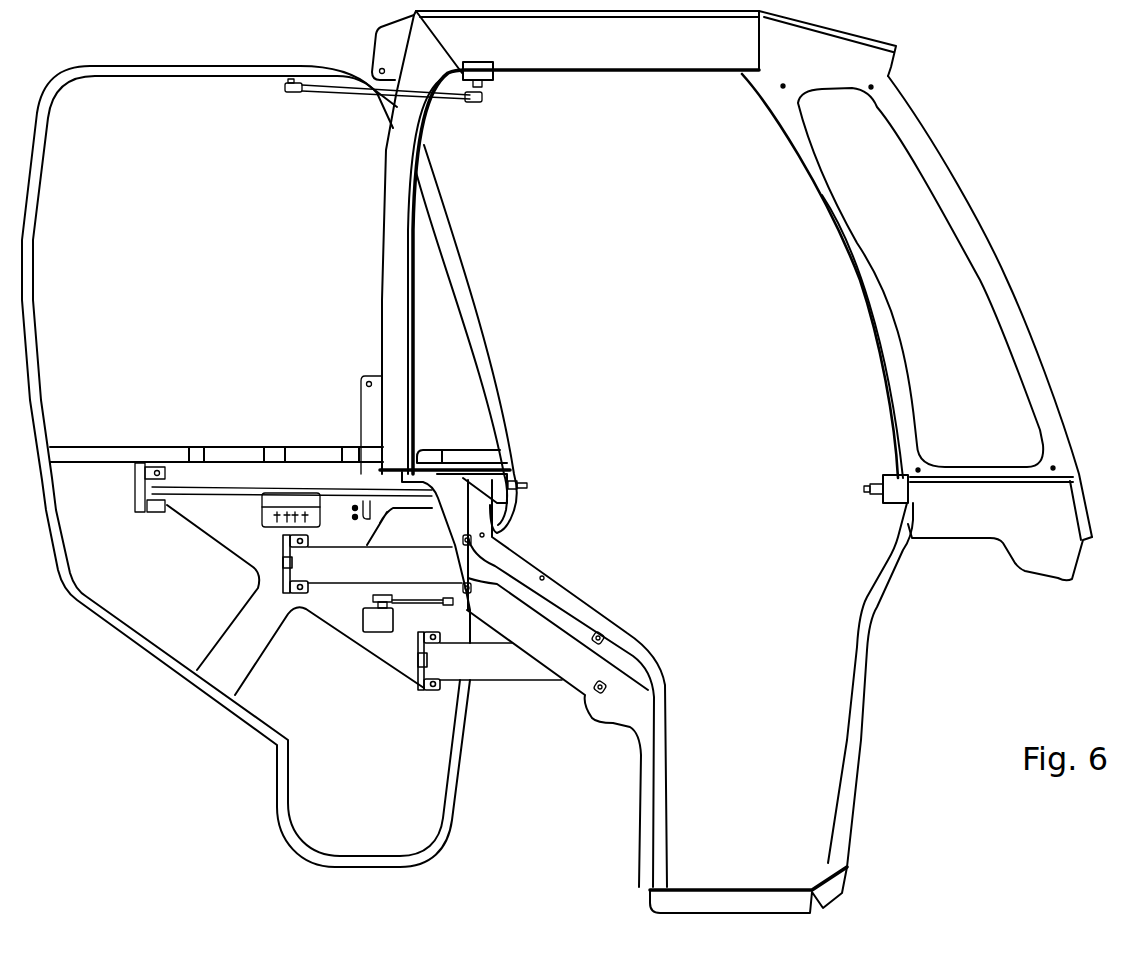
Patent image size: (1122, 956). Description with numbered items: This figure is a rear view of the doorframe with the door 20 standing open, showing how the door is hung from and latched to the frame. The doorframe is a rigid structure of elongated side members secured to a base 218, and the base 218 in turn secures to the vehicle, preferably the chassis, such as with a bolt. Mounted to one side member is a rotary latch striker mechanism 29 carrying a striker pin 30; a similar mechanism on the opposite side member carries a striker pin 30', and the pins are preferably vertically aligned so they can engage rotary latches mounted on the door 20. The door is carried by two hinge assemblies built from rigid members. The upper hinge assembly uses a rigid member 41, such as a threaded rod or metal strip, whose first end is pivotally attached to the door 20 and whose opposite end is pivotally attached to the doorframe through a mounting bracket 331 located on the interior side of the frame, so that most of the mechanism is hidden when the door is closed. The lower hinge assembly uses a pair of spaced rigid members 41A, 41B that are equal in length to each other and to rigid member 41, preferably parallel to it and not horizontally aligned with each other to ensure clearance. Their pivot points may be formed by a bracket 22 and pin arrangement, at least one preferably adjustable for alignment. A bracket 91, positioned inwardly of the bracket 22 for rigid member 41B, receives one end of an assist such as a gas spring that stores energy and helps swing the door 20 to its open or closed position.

The door 20 is at (359, 741).
The bracket 22 is at (303, 541).
The rotary latch striker mechanism 29 is at (872, 520).
The striker pin 30 is at (872, 483).
The striker pin 30' is at (500, 483).
The rigid member 41 is at (338, 92).
The rigid member 41A is at (490, 673).
The rigid member 41B is at (370, 577).
The bracket 91 is at (378, 623).
The base 218 is at (728, 900).
The bracket 331 is at (488, 68).